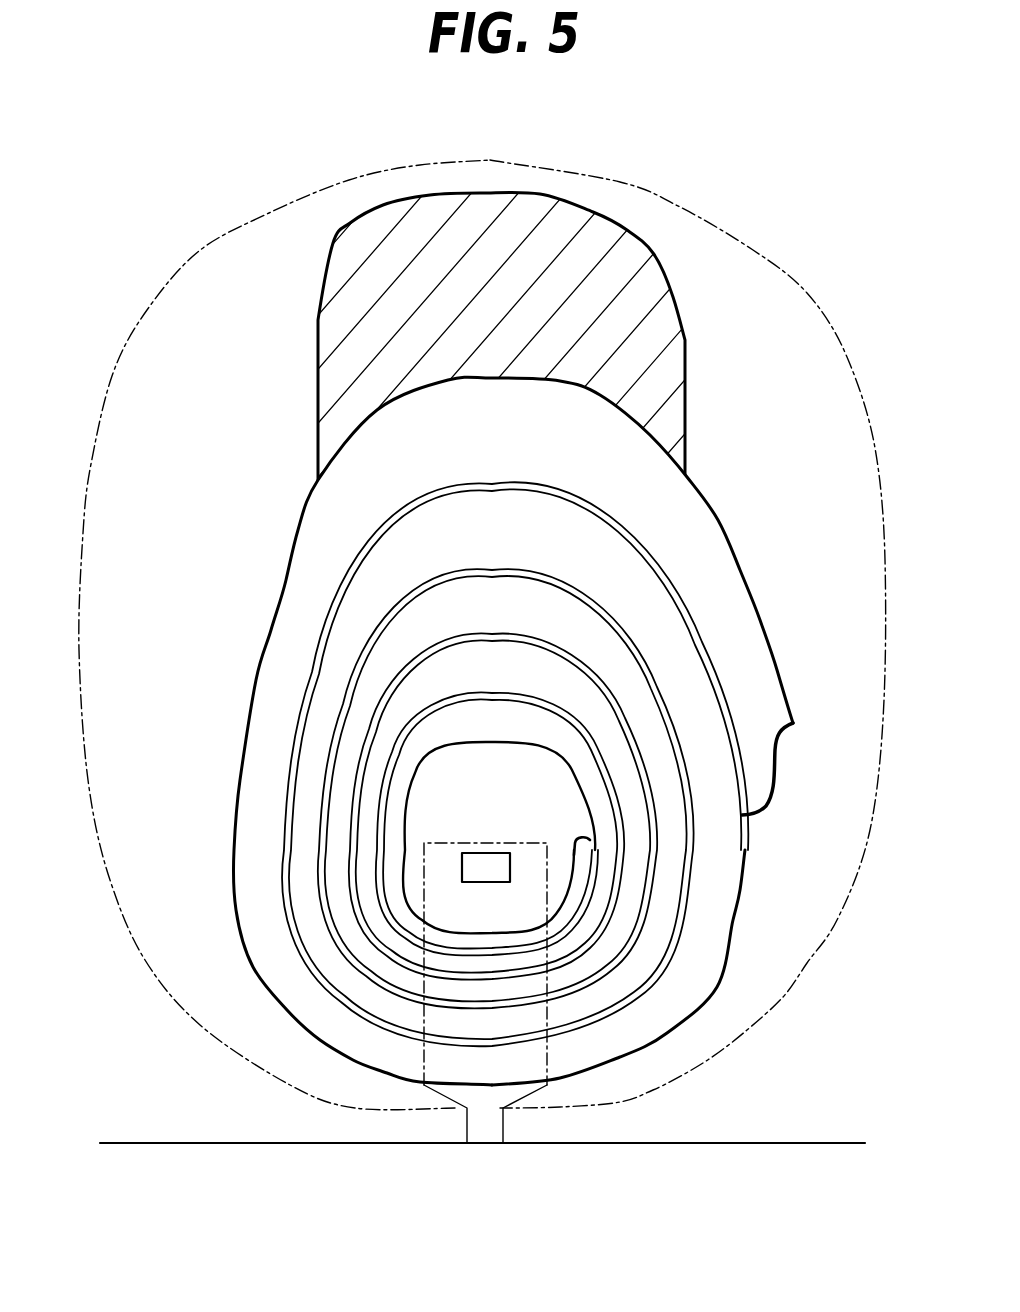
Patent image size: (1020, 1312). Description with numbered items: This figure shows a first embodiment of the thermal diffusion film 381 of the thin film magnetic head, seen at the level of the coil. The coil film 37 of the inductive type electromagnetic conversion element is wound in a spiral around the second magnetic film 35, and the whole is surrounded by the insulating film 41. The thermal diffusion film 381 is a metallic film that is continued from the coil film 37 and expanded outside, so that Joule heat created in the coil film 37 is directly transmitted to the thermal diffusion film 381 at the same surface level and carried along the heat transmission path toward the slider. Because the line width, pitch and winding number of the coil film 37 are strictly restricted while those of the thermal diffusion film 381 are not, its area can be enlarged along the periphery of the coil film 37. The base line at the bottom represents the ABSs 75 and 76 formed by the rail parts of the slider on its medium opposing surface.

The thermal diffusion film 381 is at (543, 200).
The coil film 37 is at (663, 1023).
The second magnetic film 35 is at (420, 1052).
The insulating film 41 is at (783, 997).
The ABS 75 is at (482, 1178).
The ABS 76 is at (612, 1148).